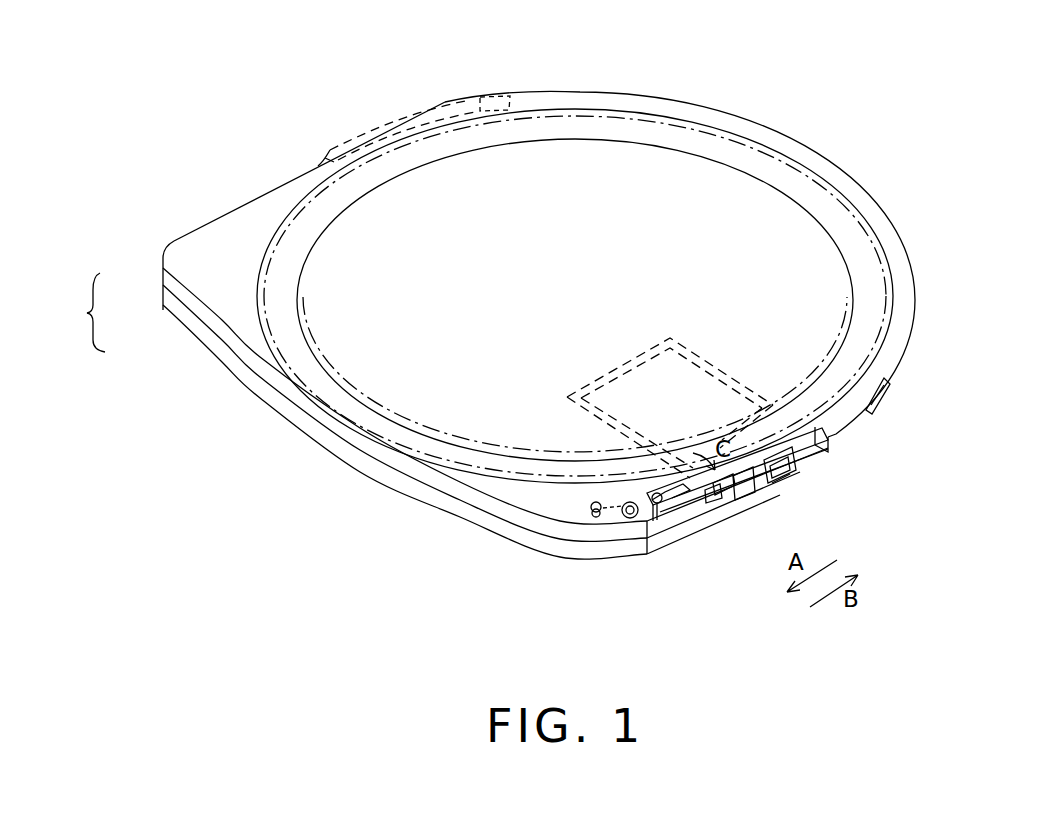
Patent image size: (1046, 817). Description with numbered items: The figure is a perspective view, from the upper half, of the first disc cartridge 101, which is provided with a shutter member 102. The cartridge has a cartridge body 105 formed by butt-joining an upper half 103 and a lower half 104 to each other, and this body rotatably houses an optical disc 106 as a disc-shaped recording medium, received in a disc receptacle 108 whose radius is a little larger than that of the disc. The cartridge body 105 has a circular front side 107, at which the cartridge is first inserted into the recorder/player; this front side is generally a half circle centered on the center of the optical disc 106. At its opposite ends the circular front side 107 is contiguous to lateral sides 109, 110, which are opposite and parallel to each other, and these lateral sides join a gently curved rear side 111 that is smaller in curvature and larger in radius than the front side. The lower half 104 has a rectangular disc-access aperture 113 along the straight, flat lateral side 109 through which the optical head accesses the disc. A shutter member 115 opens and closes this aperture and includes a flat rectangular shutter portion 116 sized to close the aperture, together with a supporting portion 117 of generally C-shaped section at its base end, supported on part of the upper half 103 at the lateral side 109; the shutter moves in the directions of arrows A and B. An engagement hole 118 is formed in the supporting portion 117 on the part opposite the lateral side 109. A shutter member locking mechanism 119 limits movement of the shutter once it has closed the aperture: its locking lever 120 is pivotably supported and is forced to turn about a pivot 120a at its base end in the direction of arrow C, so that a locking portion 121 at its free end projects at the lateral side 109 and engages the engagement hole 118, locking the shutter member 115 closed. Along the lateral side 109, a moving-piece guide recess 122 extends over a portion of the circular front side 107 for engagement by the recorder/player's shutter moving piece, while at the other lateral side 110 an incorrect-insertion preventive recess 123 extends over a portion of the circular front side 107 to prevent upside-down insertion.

The first disc cartridge 101 is at (824, 142).
The shutter member 102 is at (813, 450).
The upper half 103 is at (165, 273).
The lower half 104 is at (165, 306).
The cartridge body 105 is at (76, 312).
The optical disc 106 is at (552, 130).
The circular front side 107 is at (750, 117).
The disc receptacle 108 is at (657, 120).
The lateral side 109 is at (651, 547).
The lateral side 110 is at (223, 210).
The rear side 111 is at (277, 417).
The disc-access aperture 113 is at (723, 397).
The shutter member 115 is at (810, 460).
The shutter portion 116 is at (668, 387).
The supporting portion 117 is at (756, 492).
The engagement hole 118 is at (782, 475).
The shutter member locking mechanism 119 is at (727, 488).
The locking lever 120 is at (679, 500).
The pivot 120a is at (660, 503).
The locking portion 121 is at (777, 477).
The moving-piece guide recess 122 is at (857, 418).
The incorrect-insertion preventive recess 123 is at (403, 120).